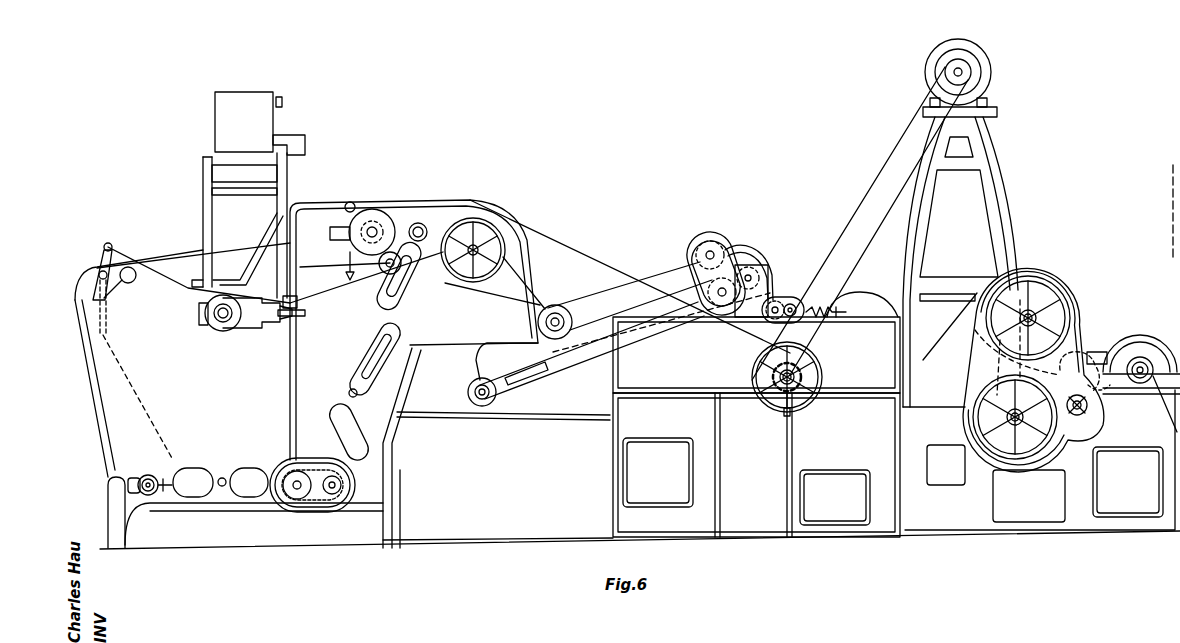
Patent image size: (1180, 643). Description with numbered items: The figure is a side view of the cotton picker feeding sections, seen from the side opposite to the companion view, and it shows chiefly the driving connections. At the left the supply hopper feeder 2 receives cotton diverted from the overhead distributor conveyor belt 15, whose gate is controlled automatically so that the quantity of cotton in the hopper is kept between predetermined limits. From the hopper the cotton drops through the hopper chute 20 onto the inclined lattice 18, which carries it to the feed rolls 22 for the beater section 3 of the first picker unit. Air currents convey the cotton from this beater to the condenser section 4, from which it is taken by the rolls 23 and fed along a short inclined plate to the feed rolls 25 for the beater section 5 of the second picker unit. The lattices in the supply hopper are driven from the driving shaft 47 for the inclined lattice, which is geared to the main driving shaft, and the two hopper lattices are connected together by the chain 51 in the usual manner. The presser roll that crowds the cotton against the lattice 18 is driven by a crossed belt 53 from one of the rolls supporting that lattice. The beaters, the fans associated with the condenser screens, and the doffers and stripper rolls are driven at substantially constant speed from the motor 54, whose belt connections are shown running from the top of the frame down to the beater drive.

The supply hopper feeder 2 is at (92, 366).
The beater section 3 is at (712, 402).
The condenser section 4 is at (1053, 262).
The beater section 5 is at (1143, 333).
The conveyor belt 15 is at (248, 153).
The inclined lattice 18 is at (660, 317).
The hopper chute 20 is at (530, 277).
The feed rolls 22 is at (791, 300).
The rolls 23 is at (1080, 385).
The feed rolls 25 is at (1090, 392).
The driving shaft 47 is at (470, 200).
The chain 51 is at (316, 505).
The crossed belt 53 is at (495, 368).
The motor 54 is at (980, 66).